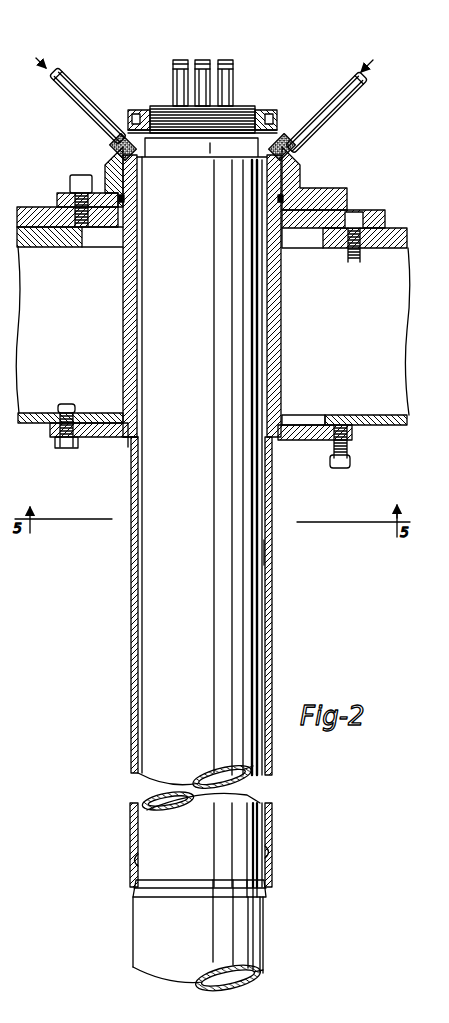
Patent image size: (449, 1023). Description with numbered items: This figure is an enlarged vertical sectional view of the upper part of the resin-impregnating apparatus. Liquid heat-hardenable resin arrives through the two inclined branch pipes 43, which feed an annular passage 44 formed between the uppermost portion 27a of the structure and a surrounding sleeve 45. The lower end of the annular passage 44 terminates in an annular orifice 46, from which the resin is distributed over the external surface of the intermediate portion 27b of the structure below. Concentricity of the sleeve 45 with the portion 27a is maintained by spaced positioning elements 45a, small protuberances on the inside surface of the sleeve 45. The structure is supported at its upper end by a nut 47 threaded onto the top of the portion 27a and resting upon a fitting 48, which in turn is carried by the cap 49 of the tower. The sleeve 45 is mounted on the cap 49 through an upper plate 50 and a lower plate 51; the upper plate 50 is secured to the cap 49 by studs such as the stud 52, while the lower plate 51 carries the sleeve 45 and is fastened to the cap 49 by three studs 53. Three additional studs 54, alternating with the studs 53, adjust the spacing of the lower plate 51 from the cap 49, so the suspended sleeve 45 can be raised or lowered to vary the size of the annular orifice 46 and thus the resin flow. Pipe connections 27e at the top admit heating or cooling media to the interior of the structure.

The uppermost portion of the structure 27a is at (240, 648).
The intermediate portion of the structure 27b is at (140, 936).
The pipe connections 27e is at (226, 56).
The branch pipes 43 is at (90, 98).
The annular passage 44 is at (268, 551).
The sleeve 45 is at (133, 615).
The positioning elements 45a is at (135, 870).
The annular orifice 46 is at (262, 888).
The nut 47 is at (143, 110).
The fitting 48 is at (110, 165).
The cap 49 is at (33, 428).
The upper plate 50 is at (37, 207).
The lower plate 51 is at (112, 447).
The stud 52 is at (363, 238).
The studs 53 is at (70, 448).
The additional studs 54 is at (347, 447).